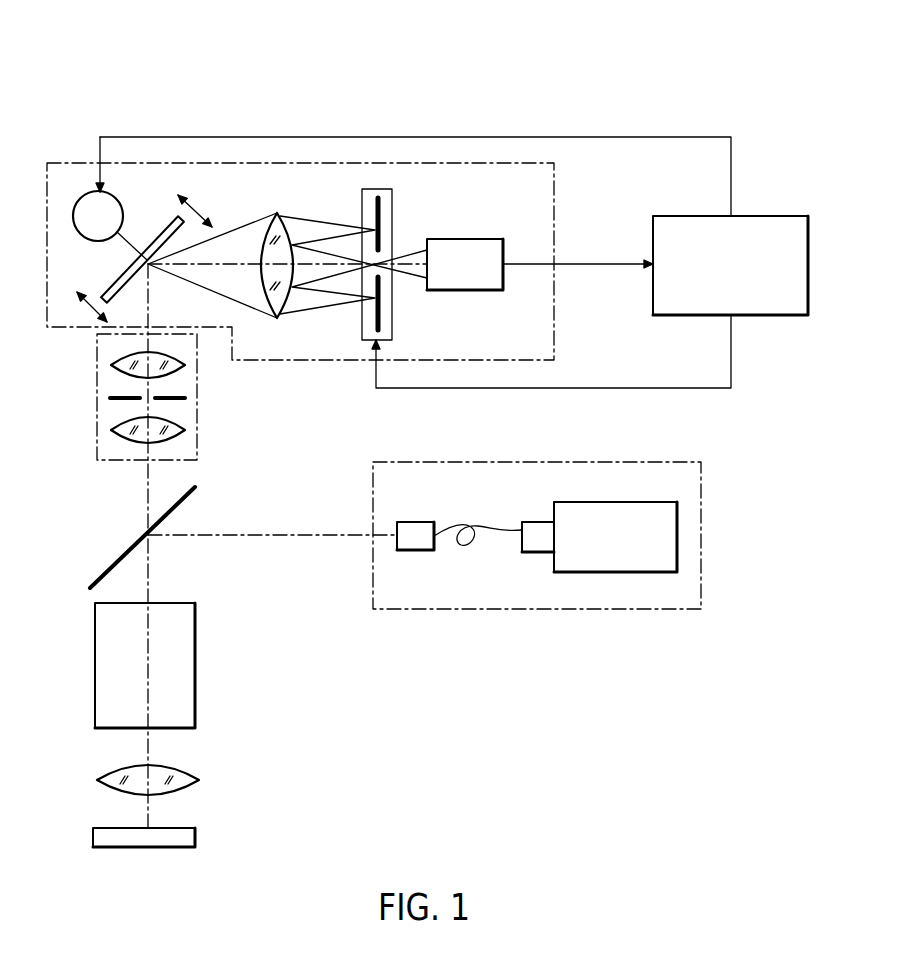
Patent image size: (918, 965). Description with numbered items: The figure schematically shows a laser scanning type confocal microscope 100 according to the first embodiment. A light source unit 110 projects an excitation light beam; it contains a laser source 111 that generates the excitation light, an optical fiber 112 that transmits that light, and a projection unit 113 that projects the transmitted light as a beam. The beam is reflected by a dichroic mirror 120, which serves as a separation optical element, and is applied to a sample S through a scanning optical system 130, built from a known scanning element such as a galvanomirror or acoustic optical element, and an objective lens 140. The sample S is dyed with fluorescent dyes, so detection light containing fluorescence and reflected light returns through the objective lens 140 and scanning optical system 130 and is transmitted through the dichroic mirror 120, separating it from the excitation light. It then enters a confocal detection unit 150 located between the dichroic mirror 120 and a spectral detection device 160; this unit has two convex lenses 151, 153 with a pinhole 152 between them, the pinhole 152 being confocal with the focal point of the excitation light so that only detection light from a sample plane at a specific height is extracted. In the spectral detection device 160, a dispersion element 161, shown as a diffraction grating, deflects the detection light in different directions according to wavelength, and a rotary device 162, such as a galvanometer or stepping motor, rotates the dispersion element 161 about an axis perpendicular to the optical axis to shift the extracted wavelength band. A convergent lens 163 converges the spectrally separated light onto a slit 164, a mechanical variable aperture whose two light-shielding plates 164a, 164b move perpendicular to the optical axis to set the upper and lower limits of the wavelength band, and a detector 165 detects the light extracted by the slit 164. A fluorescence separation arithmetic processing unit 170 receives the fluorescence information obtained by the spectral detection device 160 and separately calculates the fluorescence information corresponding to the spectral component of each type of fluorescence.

The laser scanning type confocal microscope 100 is at (90, 78).
The light source unit 110 is at (571, 535).
The laser source 111 is at (620, 502).
The optical fiber 112 is at (488, 525).
The projection unit 113 is at (420, 522).
The dichroic mirror 120 is at (108, 568).
The scanning optical system 130 is at (95, 660).
The objective lens 140 is at (102, 775).
The confocal detection unit 150 is at (146, 397).
The convex lens 151 is at (173, 436).
The pinhole 152 is at (173, 400).
The convex lens 153 is at (173, 370).
The spectral detection device 160 is at (73, 162).
The dispersion element 161 is at (108, 283).
The rotary device 162 is at (138, 192).
The convergent lens 163 is at (278, 217).
The slit 164 is at (412, 259).
The light-shielding plate 164a is at (381, 320).
The light-shielding plate 164b is at (381, 222).
The detector 165 is at (493, 239).
The fluorescence separation arithmetic processing unit 170 is at (775, 216).
The sample S is at (93, 838).